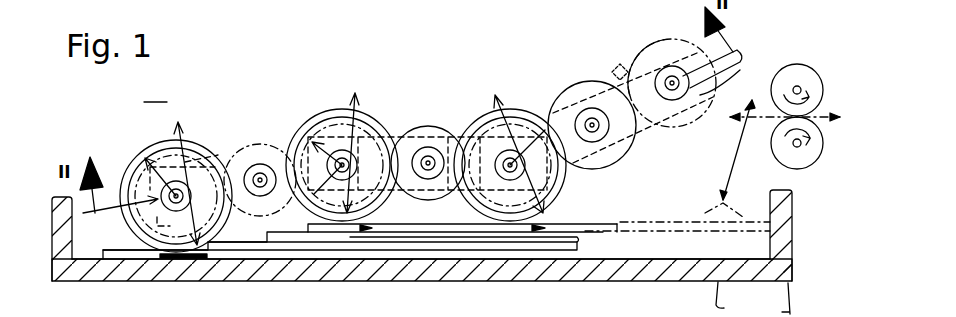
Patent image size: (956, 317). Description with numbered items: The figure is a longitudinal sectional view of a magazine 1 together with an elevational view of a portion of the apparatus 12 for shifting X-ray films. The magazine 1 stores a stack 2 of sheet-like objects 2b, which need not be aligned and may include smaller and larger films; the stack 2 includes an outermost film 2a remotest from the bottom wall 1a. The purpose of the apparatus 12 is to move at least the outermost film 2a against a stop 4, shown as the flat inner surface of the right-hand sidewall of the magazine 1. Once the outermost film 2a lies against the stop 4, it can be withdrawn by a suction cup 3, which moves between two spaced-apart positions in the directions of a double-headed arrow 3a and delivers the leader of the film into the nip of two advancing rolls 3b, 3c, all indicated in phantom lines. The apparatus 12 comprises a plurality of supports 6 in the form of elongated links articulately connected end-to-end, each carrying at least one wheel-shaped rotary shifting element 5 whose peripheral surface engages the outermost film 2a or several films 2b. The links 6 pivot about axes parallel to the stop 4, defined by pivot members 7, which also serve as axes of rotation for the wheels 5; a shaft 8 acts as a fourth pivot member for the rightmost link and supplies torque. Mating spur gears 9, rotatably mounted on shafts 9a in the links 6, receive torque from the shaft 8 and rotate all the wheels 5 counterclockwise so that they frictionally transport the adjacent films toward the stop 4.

The magazine 1 is at (46, 266).
The bottom wall 1a is at (734, 299).
The stack 2 is at (598, 223).
The outermost film 2a is at (607, 233).
The sheet-like objects 2b is at (481, 234).
The suction cup 3 is at (766, 114).
The double-headed arrow 3a is at (729, 157).
The advancing roll 3b is at (809, 64).
The advancing roll 3c is at (825, 158).
The stop 4 is at (767, 243).
The rotary shifting element 5 is at (185, 125).
The support 6 is at (140, 210).
The pivot member 7 is at (147, 152).
The shaft 8 is at (717, 69).
The spur gear 9 is at (248, 146).
The shaft 9a is at (256, 196).
The apparatus 12 is at (155, 91).